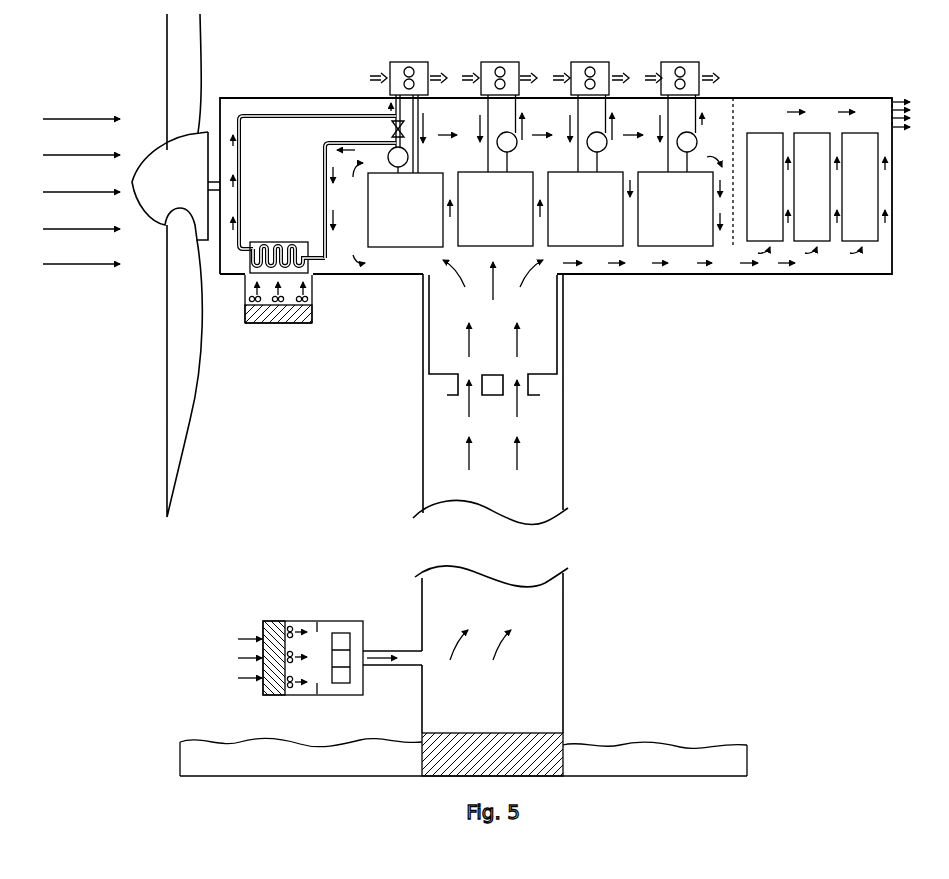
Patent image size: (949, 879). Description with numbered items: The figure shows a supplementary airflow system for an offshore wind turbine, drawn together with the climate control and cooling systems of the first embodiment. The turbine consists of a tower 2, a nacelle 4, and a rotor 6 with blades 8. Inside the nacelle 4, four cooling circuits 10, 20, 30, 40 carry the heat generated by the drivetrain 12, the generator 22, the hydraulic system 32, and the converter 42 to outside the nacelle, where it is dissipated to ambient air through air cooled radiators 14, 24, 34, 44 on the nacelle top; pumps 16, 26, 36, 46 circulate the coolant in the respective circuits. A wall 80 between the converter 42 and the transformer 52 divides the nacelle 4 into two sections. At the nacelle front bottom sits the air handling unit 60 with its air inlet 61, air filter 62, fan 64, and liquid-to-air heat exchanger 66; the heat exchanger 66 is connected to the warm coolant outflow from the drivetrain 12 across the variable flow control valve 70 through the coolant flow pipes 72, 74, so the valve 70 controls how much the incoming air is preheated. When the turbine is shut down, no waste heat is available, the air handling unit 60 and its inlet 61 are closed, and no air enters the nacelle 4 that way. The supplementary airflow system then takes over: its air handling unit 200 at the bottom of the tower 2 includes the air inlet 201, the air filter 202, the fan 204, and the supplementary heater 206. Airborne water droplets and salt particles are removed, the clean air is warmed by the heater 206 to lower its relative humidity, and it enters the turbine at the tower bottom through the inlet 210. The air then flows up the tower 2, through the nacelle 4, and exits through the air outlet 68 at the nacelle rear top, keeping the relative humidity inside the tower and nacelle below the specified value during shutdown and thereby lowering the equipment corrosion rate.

The tower 2 is at (563, 650).
The nacelle 4 is at (743, 98).
The rotor 6 is at (162, 173).
The blades 8 is at (180, 362).
The drivetrain cooling circuit 10 is at (400, 54).
The drivetrain 12 is at (380, 247).
The air cooled radiator 14 is at (390, 72).
The pump 16 is at (410, 160).
The generator cooling circuit 20 is at (499, 93).
The generator 22 is at (483, 247).
The air cooled radiator 24 is at (481, 70).
The pump 26 is at (517, 142).
The hydraulic system cooling circuit 30 is at (589, 93).
The hydraulic system 32 is at (567, 247).
The air cooled radiator 34 is at (571, 70).
The pump 36 is at (607, 142).
The converter cooling circuit 40 is at (678, 93).
The converter 42 is at (655, 247).
The air cooled radiator 44 is at (661, 70).
The pump 46 is at (697, 142).
The transformer 52 is at (865, 133).
The air handling unit 60 is at (301, 316).
The air inlet 61 is at (278, 329).
The air filter 62 is at (302, 327).
The fan 64 is at (313, 300).
The liquid-to-air heat exchanger 66 is at (292, 245).
The air outlet 68 is at (916, 112).
The variable flow control valve 70 is at (392, 128).
The coolant flow pipe 72 is at (325, 173).
The coolant flow pipe 74 is at (240, 160).
The wall 80 is at (733, 222).
The air handling unit 200 is at (279, 638).
The air inlet 201 is at (232, 658).
The air filter 202 is at (270, 687).
The fan 204 is at (290, 622).
The supplementary heater 206 is at (343, 633).
The inlet 210 is at (423, 658).